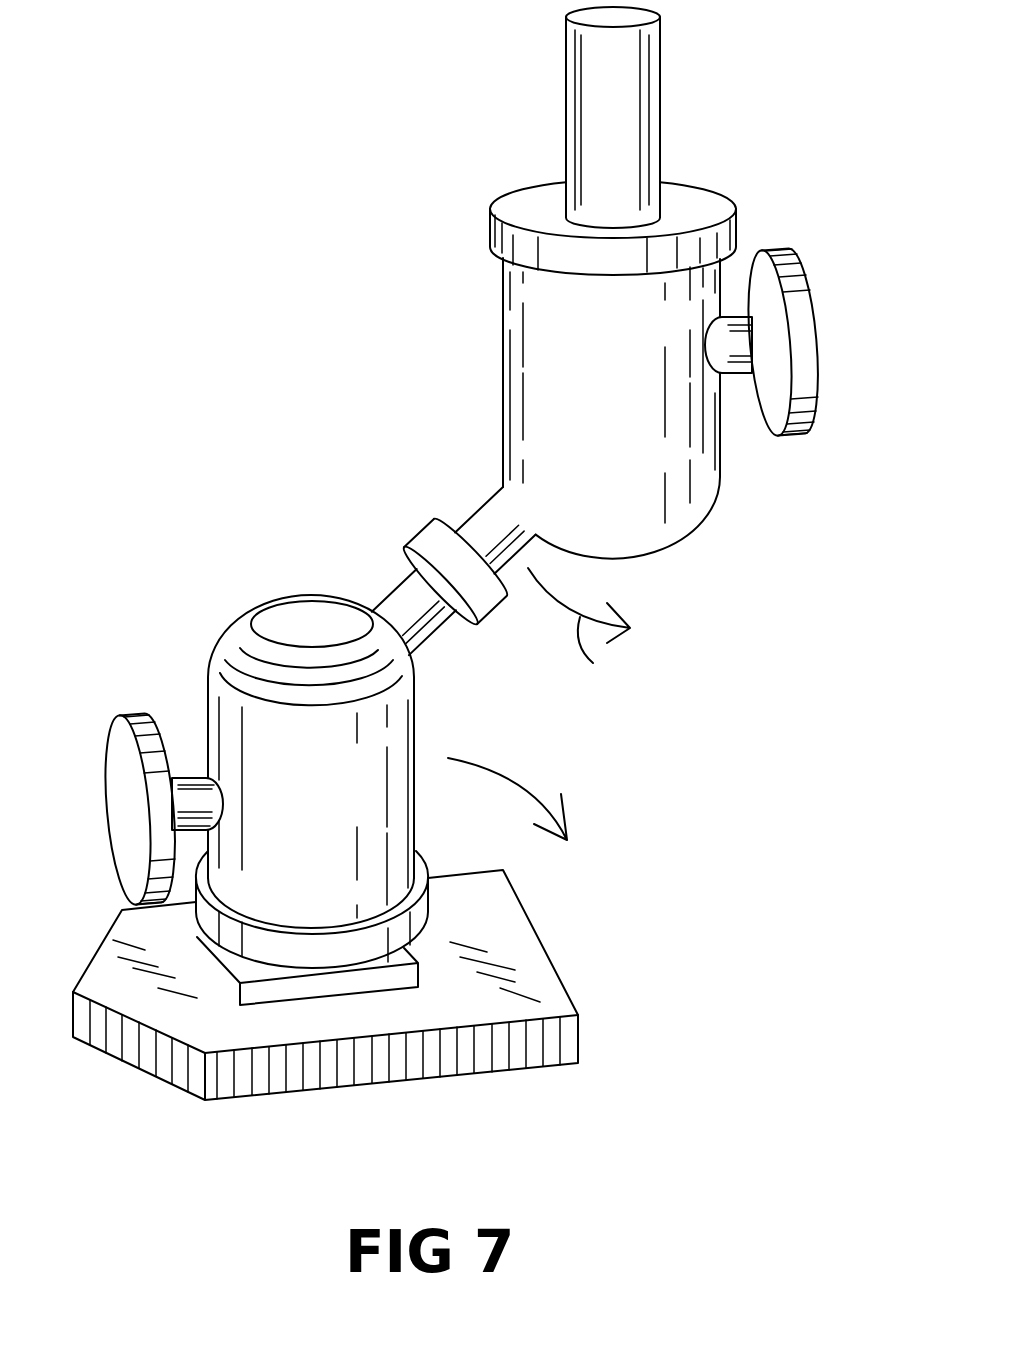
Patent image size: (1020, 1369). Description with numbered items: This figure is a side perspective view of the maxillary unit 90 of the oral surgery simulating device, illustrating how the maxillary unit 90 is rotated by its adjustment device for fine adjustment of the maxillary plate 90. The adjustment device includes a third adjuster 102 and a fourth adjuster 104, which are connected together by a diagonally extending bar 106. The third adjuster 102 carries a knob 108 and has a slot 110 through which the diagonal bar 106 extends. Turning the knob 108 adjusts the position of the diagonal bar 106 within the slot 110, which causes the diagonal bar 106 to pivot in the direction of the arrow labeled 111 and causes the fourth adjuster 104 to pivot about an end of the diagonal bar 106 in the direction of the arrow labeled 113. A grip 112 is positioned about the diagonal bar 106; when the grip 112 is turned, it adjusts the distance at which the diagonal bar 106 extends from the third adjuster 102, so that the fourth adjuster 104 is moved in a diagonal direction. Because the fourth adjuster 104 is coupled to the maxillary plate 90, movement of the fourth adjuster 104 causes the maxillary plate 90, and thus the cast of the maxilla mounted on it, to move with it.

The maxillary unit 90 is at (515, 938).
The third adjuster 102 is at (614, 558).
The fourth adjuster 104 is at (397, 694).
The diagonally extending bar 106 is at (398, 598).
The knob 108 is at (797, 315).
The slot 110 is at (552, 540).
The arrow indicating pivoting direction of diagonal bar 111 is at (585, 633).
The grip 112 is at (496, 598).
The arrow indicating pivoting direction of fourth adjuster 113 is at (523, 790).